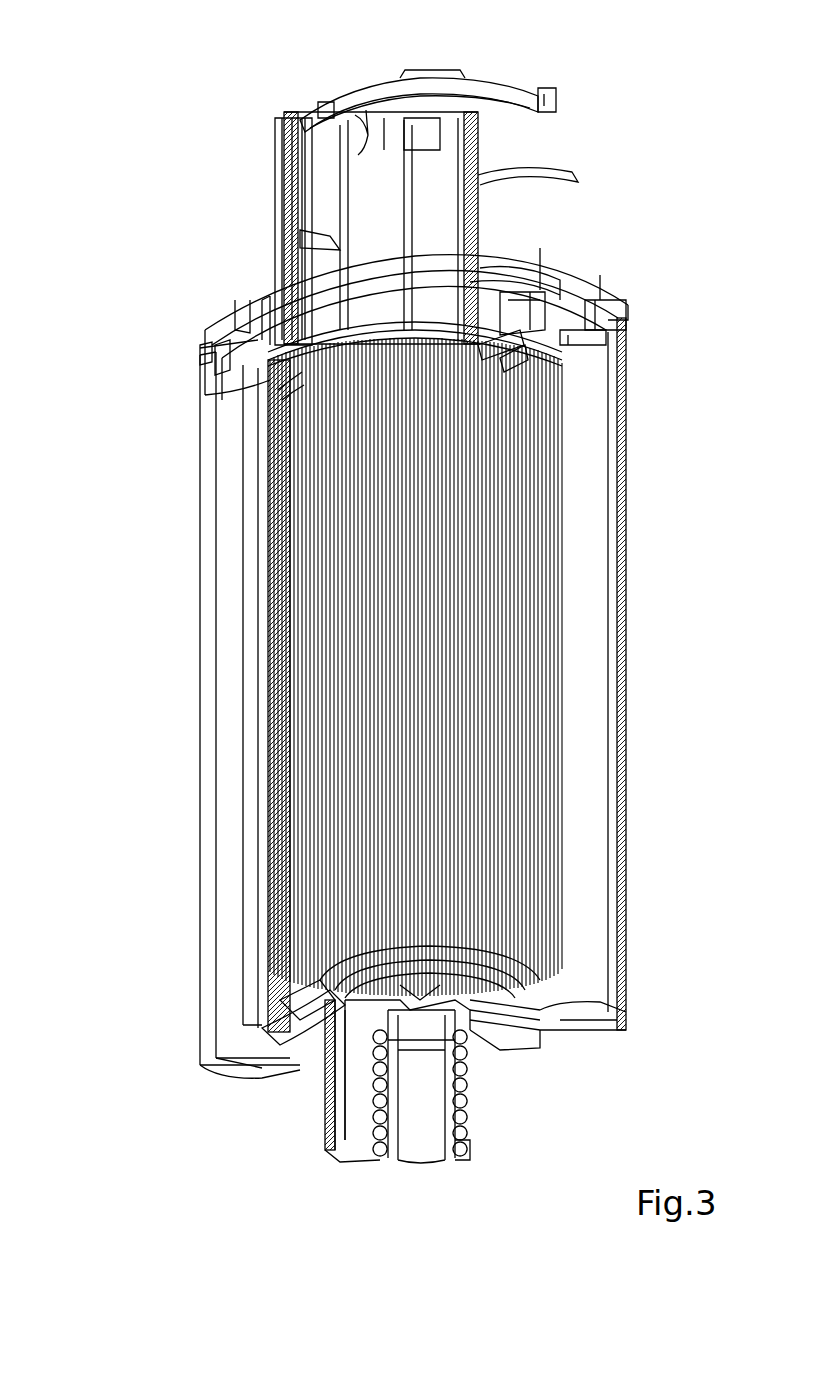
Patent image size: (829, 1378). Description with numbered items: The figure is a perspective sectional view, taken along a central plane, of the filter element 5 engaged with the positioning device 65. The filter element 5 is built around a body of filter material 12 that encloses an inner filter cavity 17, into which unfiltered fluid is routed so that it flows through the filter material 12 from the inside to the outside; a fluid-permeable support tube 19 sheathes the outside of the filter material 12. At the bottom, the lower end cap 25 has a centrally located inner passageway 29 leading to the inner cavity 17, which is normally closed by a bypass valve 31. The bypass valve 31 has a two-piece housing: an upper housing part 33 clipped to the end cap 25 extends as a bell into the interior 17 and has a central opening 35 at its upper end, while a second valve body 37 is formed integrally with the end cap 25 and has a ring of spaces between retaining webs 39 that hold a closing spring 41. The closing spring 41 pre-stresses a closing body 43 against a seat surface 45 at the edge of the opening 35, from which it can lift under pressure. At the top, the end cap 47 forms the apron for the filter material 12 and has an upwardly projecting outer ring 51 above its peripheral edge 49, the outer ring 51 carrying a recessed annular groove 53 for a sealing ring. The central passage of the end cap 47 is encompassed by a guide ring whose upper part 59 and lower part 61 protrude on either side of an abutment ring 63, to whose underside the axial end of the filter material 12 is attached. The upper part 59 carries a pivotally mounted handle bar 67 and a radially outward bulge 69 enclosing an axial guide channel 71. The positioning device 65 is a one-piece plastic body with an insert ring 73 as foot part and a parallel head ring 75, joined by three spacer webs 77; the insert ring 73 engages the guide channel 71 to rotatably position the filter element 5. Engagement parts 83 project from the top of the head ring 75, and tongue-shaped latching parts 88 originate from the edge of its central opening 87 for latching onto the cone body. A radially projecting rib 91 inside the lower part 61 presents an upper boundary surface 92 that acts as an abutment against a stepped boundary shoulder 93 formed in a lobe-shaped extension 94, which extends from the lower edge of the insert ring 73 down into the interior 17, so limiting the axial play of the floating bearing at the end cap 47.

The filter element 5 is at (176, 528).
The filter material 12 is at (590, 895).
The inner filter cavity 17 is at (490, 895).
The support tube 19 is at (626, 468).
The lower end cap 25 is at (265, 1072).
The inner passageway 29 is at (530, 1035).
The bypass valve 31 is at (478, 1118).
The upper housing part 33 is at (300, 992).
The central opening 35 is at (450, 990).
The second valve body 37 is at (456, 1150).
The retaining webs 39 is at (335, 1150).
The closing spring 41 is at (352, 1158).
The closing body 43 is at (440, 1005).
The seat surface 45 is at (330, 975).
The end cap 47 is at (590, 290).
The peripheral edge 49 is at (626, 322).
The outer ring 51 is at (640, 305).
The annular groove 53 is at (204, 352).
The upper part 59 is at (545, 295).
The lower part 61 is at (622, 345).
The abutment ring 63 is at (565, 292).
The positioning device 65 is at (262, 182).
The handle bar 67 is at (562, 170).
The bulge 69 is at (235, 298).
The guide channel 71 is at (265, 268).
The insert ring 73 is at (340, 248).
The head ring 75 is at (478, 88).
The spacer webs 77 is at (284, 165).
The engagement parts 83 is at (322, 108).
The central opening 87 is at (368, 108).
The latching parts 88 is at (358, 160).
The rib 91 is at (375, 330).
The boundary surface 92 is at (300, 388).
The boundary shoulder 93 is at (500, 345).
The lobe-shaped extension 94 is at (490, 360).